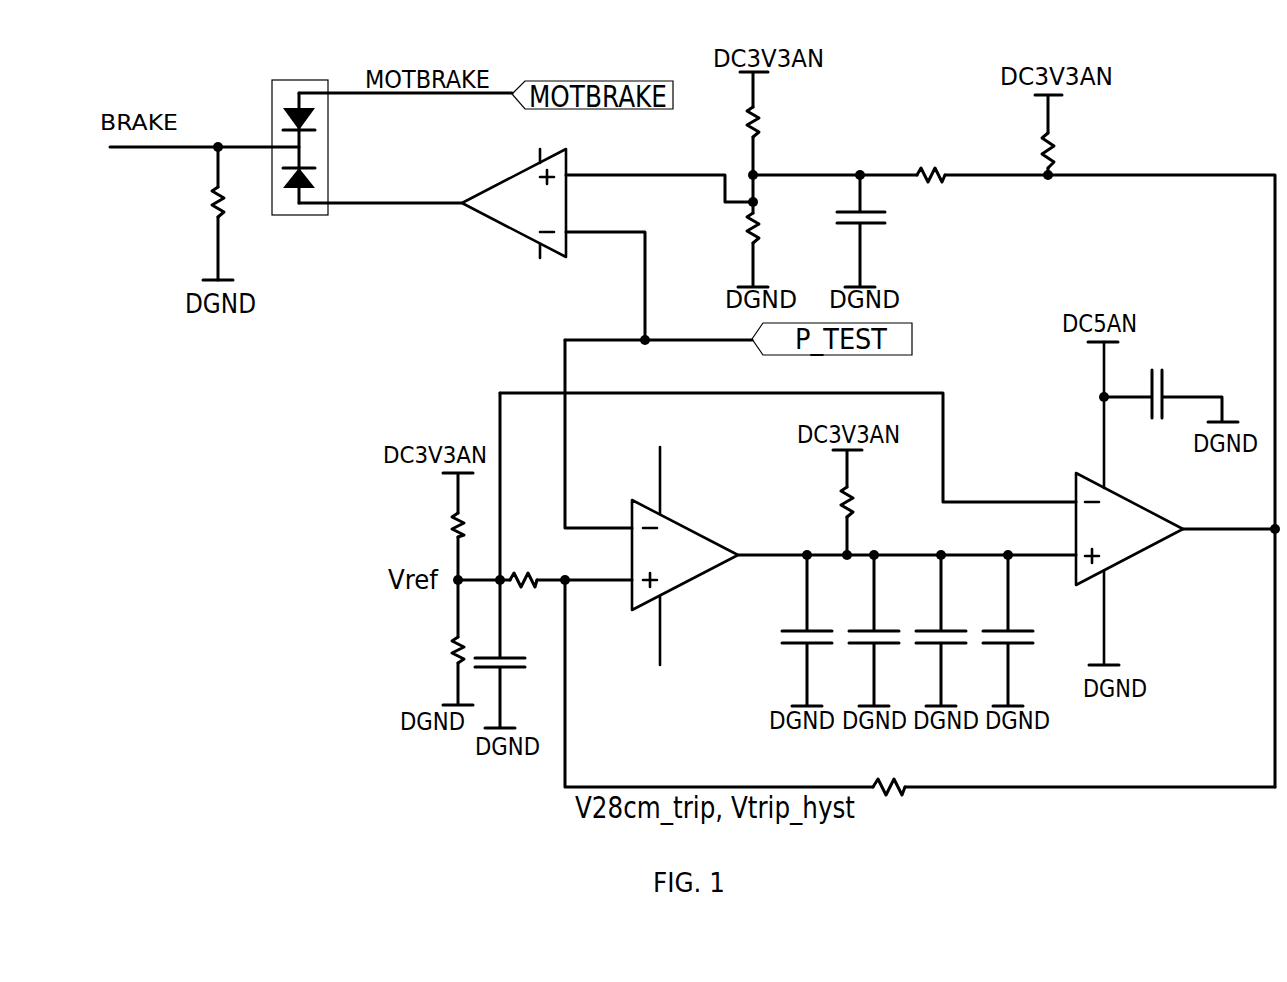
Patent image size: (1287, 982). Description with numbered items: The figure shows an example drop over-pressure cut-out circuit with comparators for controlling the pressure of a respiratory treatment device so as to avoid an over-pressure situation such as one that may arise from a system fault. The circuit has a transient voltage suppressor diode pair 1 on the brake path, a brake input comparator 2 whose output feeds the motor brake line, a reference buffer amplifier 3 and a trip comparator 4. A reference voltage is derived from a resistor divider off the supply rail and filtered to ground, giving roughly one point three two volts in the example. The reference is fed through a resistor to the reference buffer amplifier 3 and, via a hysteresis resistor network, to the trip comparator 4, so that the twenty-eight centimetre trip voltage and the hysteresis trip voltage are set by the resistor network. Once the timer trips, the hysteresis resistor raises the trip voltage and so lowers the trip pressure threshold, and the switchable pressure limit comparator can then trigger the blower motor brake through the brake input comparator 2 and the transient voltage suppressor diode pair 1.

The transient voltage suppressor diode pair 1 is at (300, 216).
The brake input comparator 2 is at (520, 233).
The reference buffer amplifier 3 is at (690, 581).
The trip comparator 4 is at (1130, 558).